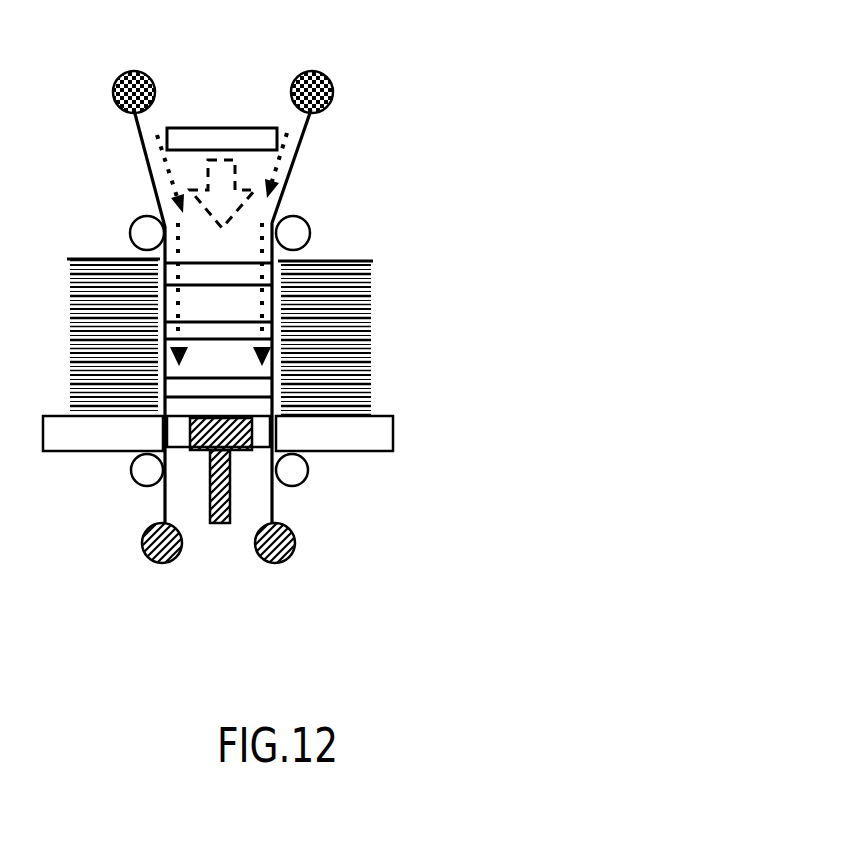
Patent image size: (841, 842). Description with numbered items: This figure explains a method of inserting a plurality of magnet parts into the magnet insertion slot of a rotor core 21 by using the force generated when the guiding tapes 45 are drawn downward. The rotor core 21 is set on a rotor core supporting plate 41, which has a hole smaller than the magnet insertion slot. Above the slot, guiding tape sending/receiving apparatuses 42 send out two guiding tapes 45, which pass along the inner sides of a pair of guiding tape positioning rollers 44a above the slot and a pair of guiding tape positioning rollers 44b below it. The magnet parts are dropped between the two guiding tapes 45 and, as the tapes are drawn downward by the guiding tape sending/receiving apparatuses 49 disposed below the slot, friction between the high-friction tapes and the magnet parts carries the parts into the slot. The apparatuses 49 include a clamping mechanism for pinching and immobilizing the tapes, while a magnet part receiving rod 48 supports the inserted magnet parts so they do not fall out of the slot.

The guiding tape sending/receiving apparatus 42 is at (333, 82).
The guiding tape 45 is at (290, 165).
The guiding tape positioning roller 44a is at (307, 228).
The rotor core 21 is at (368, 353).
The rotor core supporting plate 41 is at (394, 432).
The guiding tape positioning roller 44b is at (308, 475).
The magnet part receiving rod 48 is at (222, 523).
The guiding tape sending/receiving apparatus 49 is at (295, 548).